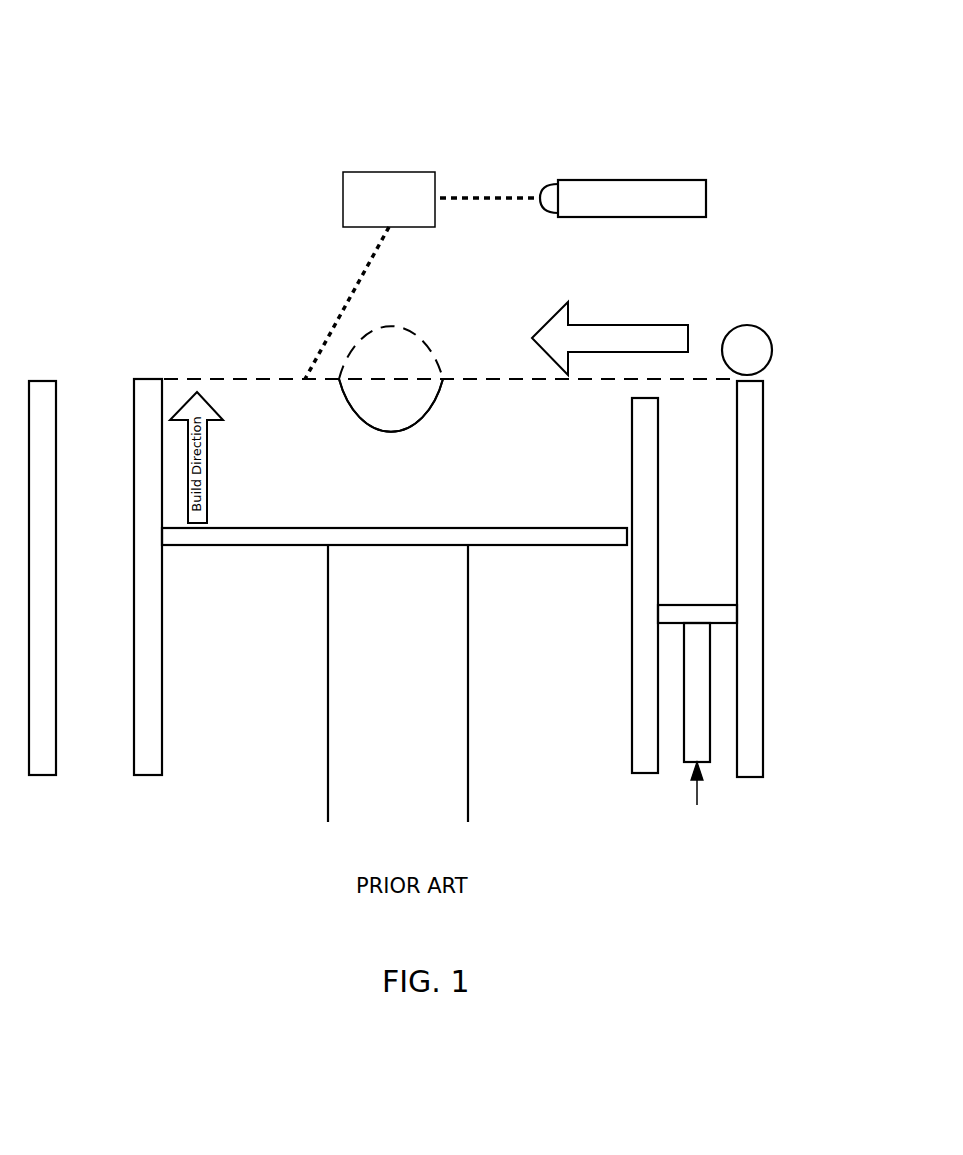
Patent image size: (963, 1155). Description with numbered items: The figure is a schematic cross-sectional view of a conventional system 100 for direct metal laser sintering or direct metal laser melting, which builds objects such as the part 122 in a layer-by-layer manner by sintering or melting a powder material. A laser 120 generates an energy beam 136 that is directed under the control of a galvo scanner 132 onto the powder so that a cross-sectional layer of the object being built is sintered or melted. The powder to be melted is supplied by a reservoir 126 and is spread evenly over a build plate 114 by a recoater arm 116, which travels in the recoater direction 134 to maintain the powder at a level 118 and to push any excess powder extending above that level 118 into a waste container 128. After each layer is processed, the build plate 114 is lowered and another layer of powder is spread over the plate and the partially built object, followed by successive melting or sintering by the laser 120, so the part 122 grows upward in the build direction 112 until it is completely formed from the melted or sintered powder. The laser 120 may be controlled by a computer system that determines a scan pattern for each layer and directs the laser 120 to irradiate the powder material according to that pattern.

The system 100 is at (160, 45).
The part being built 112 is at (526, 434).
The build plate 114 is at (583, 528).
The recoater arm 116 is at (745, 325).
The powder level 118 is at (220, 379).
The laser 120 is at (583, 180).
The part 122 is at (335, 438).
The reservoir 126 is at (703, 470).
The waste container 128 is at (117, 680).
The galvo scanner 132 is at (388, 172).
The recoater direction arrow 134 is at (555, 312).
The energy beam 136 is at (347, 300).